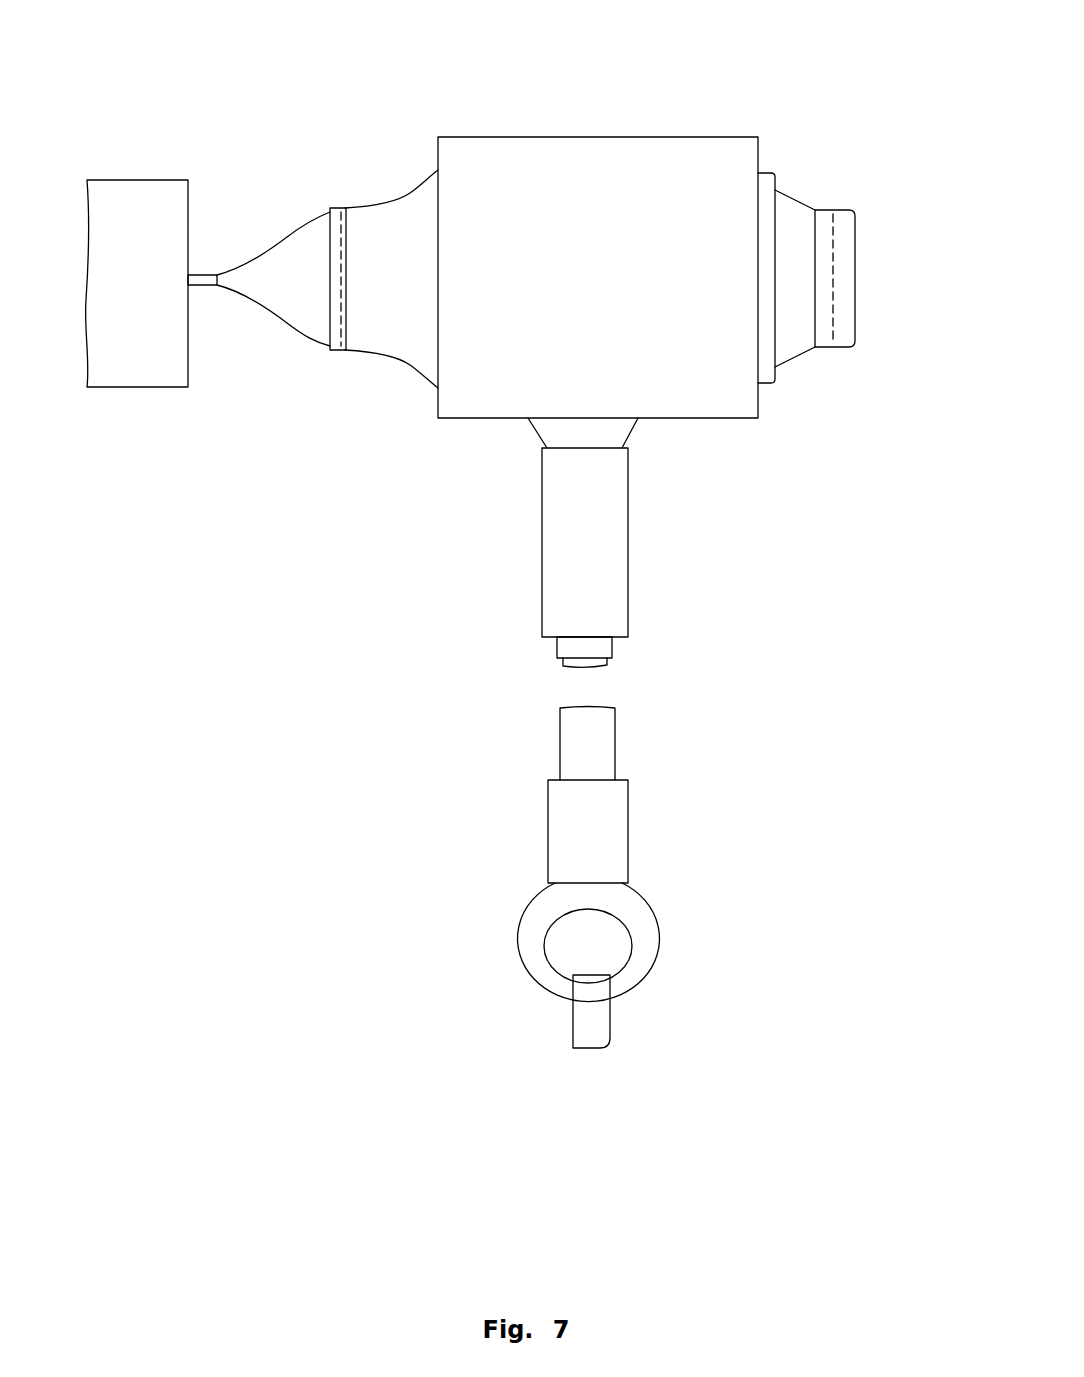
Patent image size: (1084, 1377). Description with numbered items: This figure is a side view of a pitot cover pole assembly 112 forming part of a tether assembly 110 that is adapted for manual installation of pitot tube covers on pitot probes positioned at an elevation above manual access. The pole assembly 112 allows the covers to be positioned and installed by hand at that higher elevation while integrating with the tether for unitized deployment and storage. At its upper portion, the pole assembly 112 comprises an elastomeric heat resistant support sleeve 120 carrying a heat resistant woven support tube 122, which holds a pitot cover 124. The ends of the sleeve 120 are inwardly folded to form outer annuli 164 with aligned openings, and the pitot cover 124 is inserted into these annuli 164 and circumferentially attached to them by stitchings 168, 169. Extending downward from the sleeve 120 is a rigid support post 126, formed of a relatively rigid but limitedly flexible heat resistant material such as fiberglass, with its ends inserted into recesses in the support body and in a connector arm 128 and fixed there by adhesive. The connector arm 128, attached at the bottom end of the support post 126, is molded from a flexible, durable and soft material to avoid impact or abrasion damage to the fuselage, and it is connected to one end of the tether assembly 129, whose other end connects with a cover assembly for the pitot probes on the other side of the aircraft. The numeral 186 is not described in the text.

The tether assembly 110 is at (395, 535).
The pitot cover pole assembly 112 is at (505, 70).
The support sleeve 120 is at (622, 135).
The support tube 122 is at (404, 196).
The pitot cover 124 is at (288, 233).
The support post 126 is at (546, 779).
The connector arm 128 is at (516, 952).
The tether assembly 129 is at (585, 1027).
The outer annuli 164 is at (340, 204).
The stitching 168 is at (343, 293).
The stitching 169 is at (833, 320).
The stem 186 is at (628, 538).